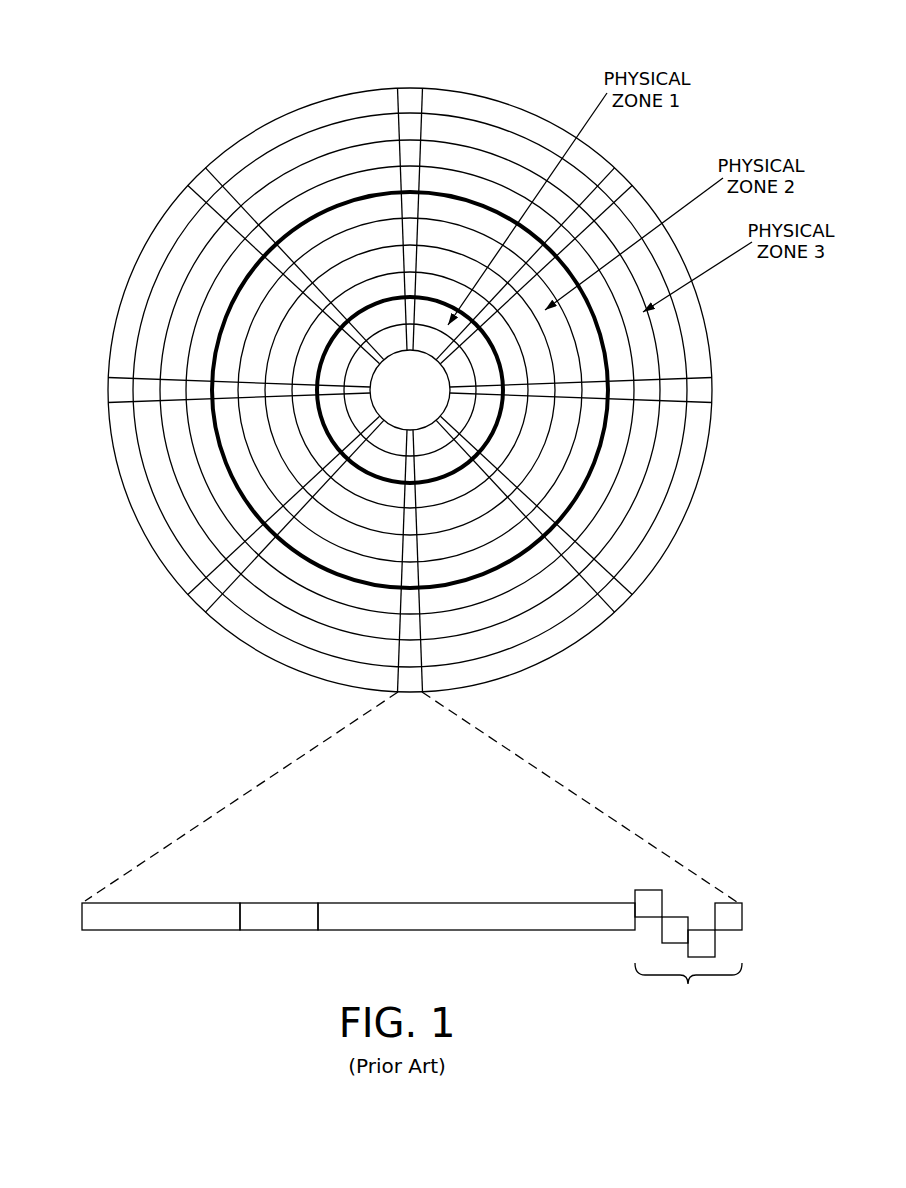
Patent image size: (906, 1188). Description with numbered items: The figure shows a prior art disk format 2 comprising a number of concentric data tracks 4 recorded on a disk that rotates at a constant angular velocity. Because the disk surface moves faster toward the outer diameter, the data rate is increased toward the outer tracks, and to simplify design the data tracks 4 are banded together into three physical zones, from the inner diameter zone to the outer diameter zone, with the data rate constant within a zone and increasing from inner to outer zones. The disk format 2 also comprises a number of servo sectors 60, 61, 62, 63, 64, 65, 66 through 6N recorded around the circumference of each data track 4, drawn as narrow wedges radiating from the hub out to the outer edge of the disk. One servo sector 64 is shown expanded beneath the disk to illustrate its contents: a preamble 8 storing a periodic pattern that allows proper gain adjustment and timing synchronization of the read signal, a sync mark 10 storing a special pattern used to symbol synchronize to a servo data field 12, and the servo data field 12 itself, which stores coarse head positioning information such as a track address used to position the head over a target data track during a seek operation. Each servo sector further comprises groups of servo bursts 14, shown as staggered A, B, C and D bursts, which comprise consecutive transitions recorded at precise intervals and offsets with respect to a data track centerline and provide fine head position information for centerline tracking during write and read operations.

The disk format 2 is at (412, 399).
The data tracks 4 is at (513, 147).
The servo sector 60 is at (412, 95).
The servo sector 61 is at (617, 182).
The servo sector 62 is at (706, 391).
The servo sector 63 is at (618, 597).
The servo sector 64 is at (277, 765).
The servo sector 65 is at (202, 600).
The servo sector 66 is at (112, 388).
The servo sector 6N is at (259, 245).
The preamble 8 is at (143, 930).
The sync mark 10 is at (277, 930).
The servo data field 12 is at (465, 928).
The servo bursts 14 is at (622, 870).